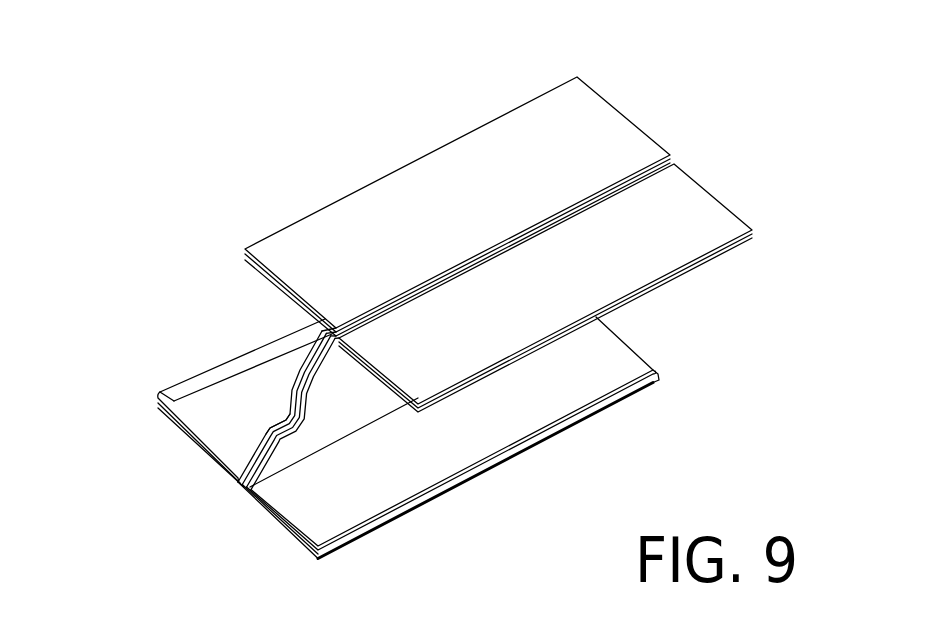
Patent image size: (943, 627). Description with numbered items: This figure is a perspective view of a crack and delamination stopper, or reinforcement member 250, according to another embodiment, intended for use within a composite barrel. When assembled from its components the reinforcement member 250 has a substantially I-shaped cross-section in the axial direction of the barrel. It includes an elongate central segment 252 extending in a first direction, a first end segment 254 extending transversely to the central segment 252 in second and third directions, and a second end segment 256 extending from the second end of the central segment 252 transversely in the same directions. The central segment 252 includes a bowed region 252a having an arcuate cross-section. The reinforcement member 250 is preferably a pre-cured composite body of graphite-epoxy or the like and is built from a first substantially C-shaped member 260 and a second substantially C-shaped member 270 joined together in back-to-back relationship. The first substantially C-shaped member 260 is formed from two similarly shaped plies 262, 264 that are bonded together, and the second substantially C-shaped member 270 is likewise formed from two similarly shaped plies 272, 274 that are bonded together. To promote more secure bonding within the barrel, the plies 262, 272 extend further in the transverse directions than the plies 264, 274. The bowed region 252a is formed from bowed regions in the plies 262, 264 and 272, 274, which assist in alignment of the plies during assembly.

The reinforcement member 250 is at (733, 180).
The elongate central segment 252 is at (347, 421).
The bowed region 252a is at (217, 367).
The first end segment 254 is at (264, 513).
The second end segment 256 is at (700, 174).
The first substantially C-shaped member 260 is at (550, 352).
The ply 262 is at (340, 546).
The ply 264 is at (366, 483).
The second substantially C-shaped member 270 is at (298, 352).
The ply 272 is at (156, 403).
The ply 274 is at (174, 399).